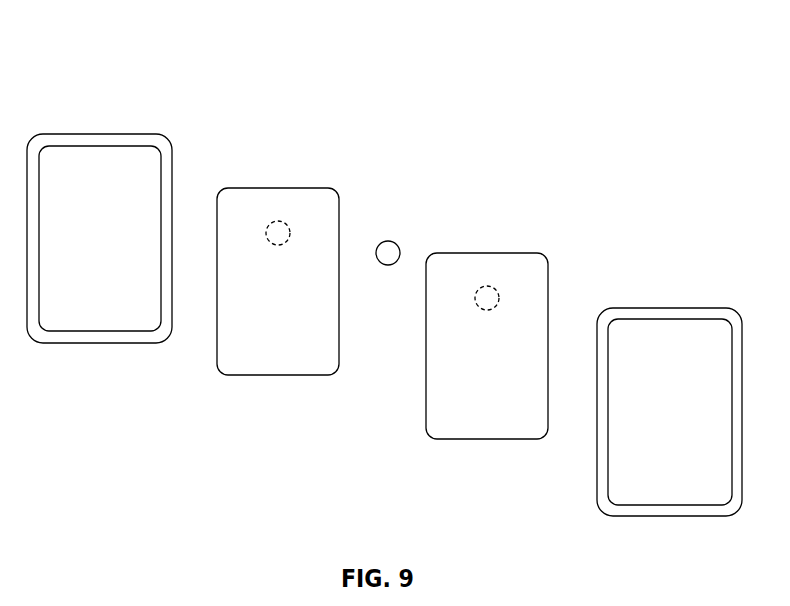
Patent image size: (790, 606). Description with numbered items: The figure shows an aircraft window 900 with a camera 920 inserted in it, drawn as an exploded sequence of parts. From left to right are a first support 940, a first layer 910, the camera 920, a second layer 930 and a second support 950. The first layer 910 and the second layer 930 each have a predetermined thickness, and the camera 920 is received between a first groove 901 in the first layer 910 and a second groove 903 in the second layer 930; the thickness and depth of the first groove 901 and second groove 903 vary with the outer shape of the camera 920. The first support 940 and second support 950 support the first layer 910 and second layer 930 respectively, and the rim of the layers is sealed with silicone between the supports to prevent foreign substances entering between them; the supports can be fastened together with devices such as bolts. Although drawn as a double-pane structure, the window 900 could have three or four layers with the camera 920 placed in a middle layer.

The window 900 is at (534, 88).
The first layer 910 is at (276, 188).
The first groove 901 is at (278, 246).
The camera 920 is at (387, 241).
The second layer 930 is at (486, 253).
The second groove 903 is at (487, 311).
The first support 940 is at (127, 134).
The second support 950 is at (669, 308).